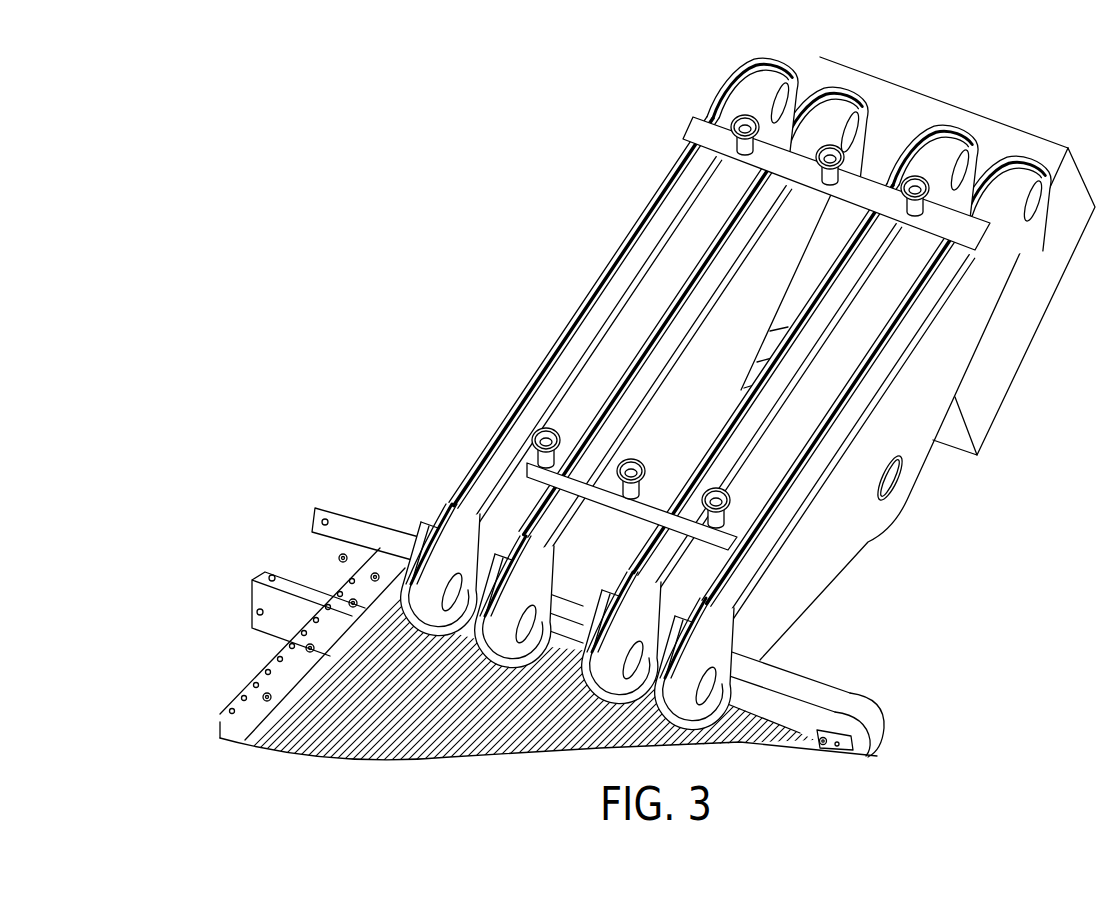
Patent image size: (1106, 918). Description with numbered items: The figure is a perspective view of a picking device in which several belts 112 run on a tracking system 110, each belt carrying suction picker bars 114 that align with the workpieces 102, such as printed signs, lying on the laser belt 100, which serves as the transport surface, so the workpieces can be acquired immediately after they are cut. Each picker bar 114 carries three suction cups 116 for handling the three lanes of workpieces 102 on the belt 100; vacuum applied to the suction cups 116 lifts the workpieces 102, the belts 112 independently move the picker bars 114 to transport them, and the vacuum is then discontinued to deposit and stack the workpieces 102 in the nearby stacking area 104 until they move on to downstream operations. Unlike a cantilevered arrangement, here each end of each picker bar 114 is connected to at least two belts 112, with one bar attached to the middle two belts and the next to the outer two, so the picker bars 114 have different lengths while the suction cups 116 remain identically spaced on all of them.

The laser belt 100 is at (323, 728).
The workpieces 102 is at (447, 686).
The stacking area 104 is at (748, 384).
The tracking system 110 is at (947, 344).
The belts 112 is at (1017, 155).
The picker bars 114 is at (659, 487).
The suction cups 116 is at (733, 510).